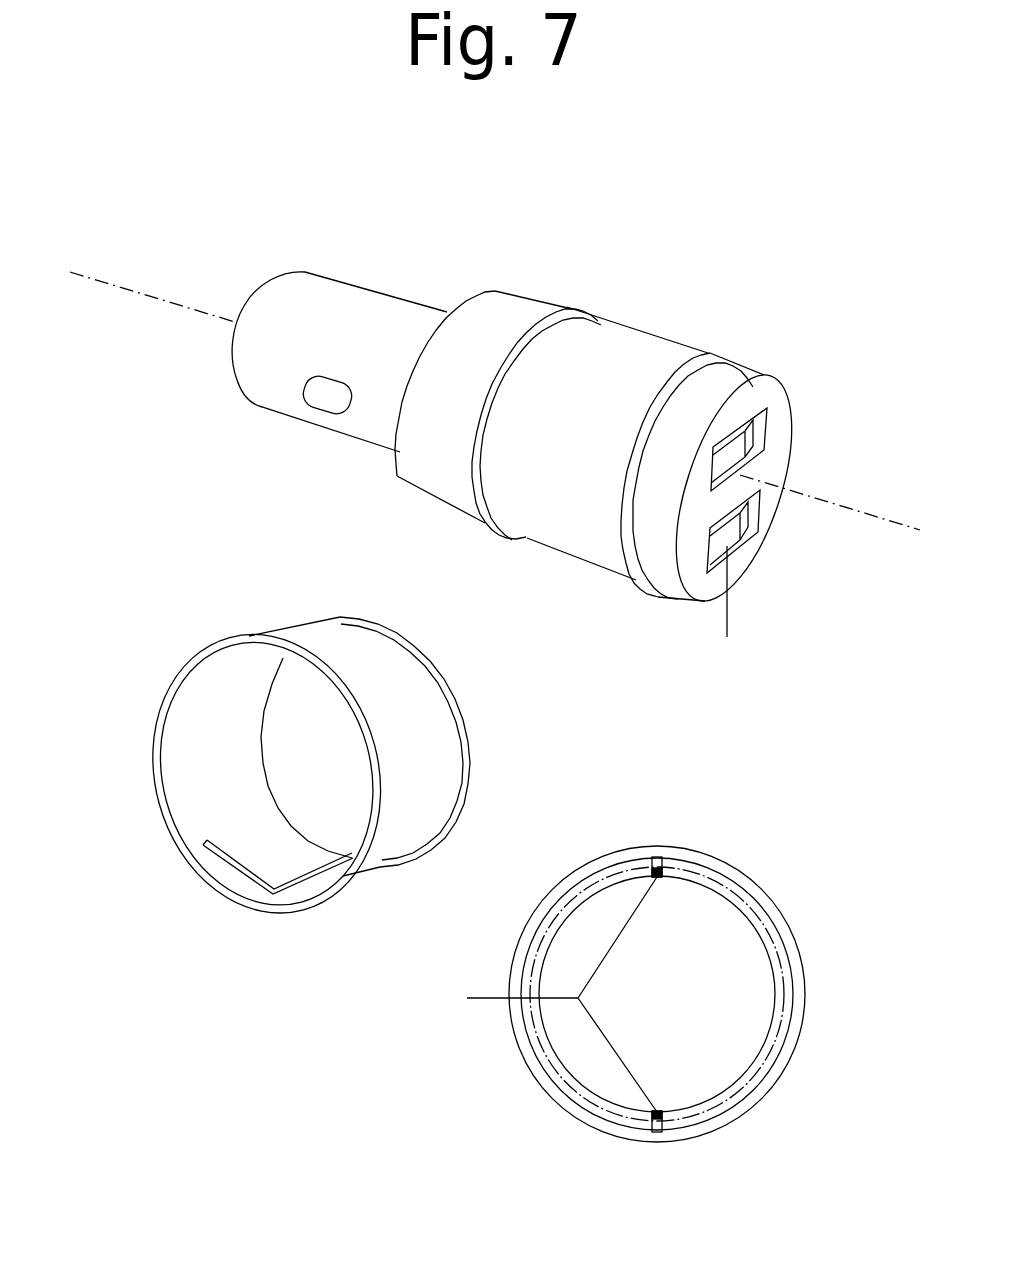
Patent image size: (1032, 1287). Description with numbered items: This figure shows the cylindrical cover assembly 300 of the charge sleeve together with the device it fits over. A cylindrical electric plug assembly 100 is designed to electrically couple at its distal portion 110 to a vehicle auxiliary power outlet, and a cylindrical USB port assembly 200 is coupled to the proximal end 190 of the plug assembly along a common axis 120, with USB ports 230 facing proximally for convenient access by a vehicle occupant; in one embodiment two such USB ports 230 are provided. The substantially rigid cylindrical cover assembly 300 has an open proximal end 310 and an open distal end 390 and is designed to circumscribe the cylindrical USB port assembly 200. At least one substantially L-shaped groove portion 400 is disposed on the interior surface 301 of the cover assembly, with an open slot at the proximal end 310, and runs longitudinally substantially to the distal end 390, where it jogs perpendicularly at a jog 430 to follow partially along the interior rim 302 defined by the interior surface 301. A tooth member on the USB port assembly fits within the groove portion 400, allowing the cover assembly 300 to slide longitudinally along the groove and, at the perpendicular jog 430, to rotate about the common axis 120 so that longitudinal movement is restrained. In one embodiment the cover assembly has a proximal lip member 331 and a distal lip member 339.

The cylindrical electric plug assembly 100 is at (410, 232).
The distal portion 110 is at (205, 338).
The common axis 120 is at (162, 292).
The proximal end 190 is at (364, 460).
The cylindrical USB port assembly 200 is at (684, 256).
The USB port 230 is at (753, 432).
The cylindrical cover assembly 300 is at (143, 700).
The interior surface 301 is at (194, 742).
The interior rim 302 is at (745, 905).
The open proximal end 310 is at (465, 673).
The proximal lip member 331 is at (758, 357).
The distal lip member 339 is at (594, 310).
The open distal end 390 is at (305, 755).
The L-shaped groove portion 400 is at (657, 846).
The perpendicular jog 430 is at (258, 888).